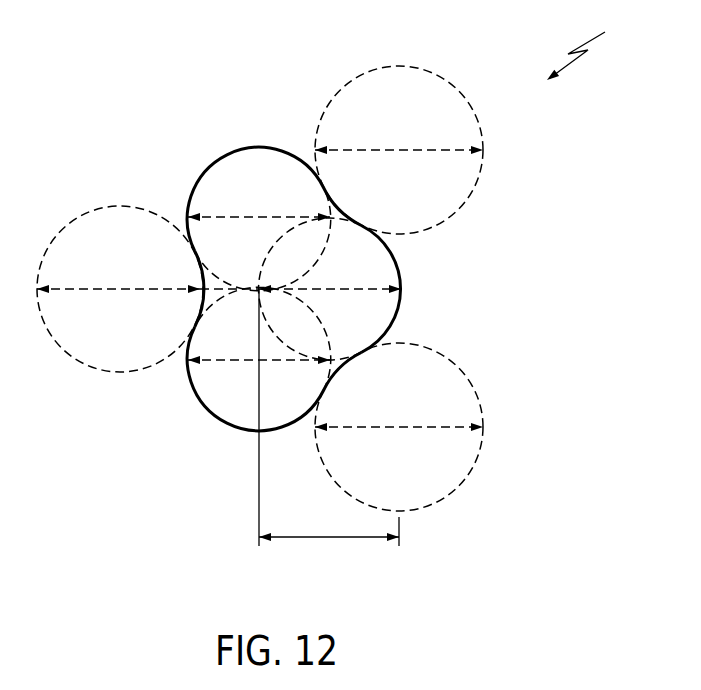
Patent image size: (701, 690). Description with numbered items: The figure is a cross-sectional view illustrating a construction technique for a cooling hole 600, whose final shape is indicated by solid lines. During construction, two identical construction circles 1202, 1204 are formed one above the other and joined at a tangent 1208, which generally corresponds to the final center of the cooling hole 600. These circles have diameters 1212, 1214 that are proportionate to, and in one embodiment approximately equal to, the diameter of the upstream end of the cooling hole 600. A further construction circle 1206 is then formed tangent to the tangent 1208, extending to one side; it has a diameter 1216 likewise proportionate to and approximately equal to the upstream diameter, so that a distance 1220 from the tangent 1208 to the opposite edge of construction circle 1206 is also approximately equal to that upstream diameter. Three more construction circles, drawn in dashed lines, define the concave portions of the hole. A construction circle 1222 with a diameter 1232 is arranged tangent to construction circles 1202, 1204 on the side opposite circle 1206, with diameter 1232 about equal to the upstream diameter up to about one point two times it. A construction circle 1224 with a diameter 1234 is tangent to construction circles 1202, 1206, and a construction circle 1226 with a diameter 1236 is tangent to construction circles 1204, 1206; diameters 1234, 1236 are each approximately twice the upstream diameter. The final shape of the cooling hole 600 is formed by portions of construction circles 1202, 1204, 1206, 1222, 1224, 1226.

The cooling hole 600 is at (603, 49).
The construction circle 1202 is at (238, 148).
The construction circle 1204 is at (192, 385).
The construction circle 1206 is at (403, 278).
The tangent 1208 is at (258, 292).
The diameter 1212 is at (262, 216).
The diameter 1214 is at (248, 362).
The diameter 1216 is at (333, 289).
The distance 1220 is at (330, 537).
The construction circle 1222 is at (102, 204).
The construction circle 1224 is at (451, 84).
The construction circle 1226 is at (463, 376).
The diameter 1232 is at (120, 288).
The diameter 1234 is at (415, 149).
The diameter 1236 is at (410, 427).